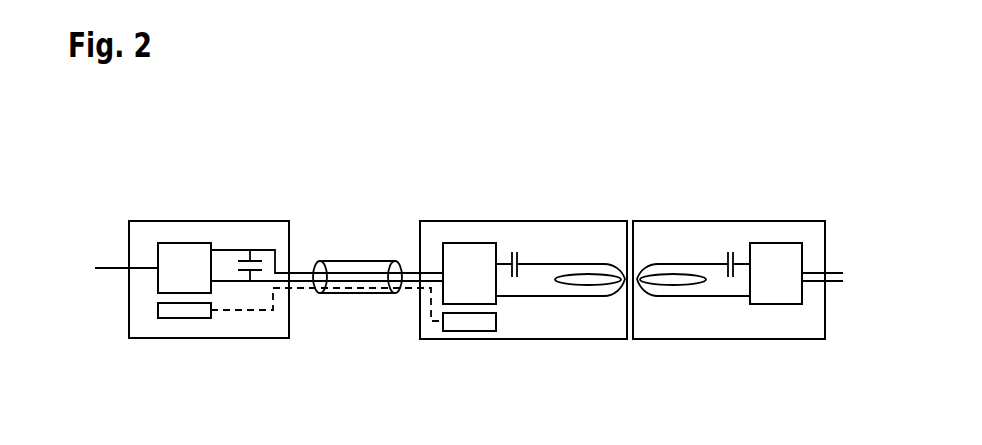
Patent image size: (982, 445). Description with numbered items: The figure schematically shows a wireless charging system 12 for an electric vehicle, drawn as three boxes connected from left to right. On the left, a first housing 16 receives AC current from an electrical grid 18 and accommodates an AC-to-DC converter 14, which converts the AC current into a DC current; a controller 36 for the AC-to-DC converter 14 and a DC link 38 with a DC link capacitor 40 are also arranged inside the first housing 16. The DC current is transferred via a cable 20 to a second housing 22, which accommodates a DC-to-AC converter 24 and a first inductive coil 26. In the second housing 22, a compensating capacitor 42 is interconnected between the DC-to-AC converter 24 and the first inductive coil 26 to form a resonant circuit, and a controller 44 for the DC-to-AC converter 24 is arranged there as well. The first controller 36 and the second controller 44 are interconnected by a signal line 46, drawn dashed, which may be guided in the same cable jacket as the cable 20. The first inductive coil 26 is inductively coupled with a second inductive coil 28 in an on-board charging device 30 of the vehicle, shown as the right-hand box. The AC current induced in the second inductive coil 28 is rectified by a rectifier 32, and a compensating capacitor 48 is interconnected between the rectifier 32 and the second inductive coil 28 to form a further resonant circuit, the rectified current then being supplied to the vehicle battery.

The wireless charging system 12 is at (132, 192).
The AC-to-DC converter 14 is at (185, 243).
The first housing 16 is at (129, 322).
The electrical grid 18 is at (110, 269).
The cable 20 is at (336, 299).
The second housing 22 is at (530, 339).
The DC-to-AC converter 24 is at (467, 243).
The first inductive coil 26 is at (595, 264).
The second inductive coil 28 is at (688, 297).
The on-board charging device 30 is at (768, 221).
The rectifier 32 is at (777, 305).
The controller 36 is at (183, 318).
The DC link 38 is at (259, 238).
The DC link capacitor 40 is at (250, 276).
The compensating capacitor 42 is at (527, 254).
The controller 44 is at (468, 331).
The signal line 46 is at (357, 289).
The compensating capacitor 48 is at (720, 252).